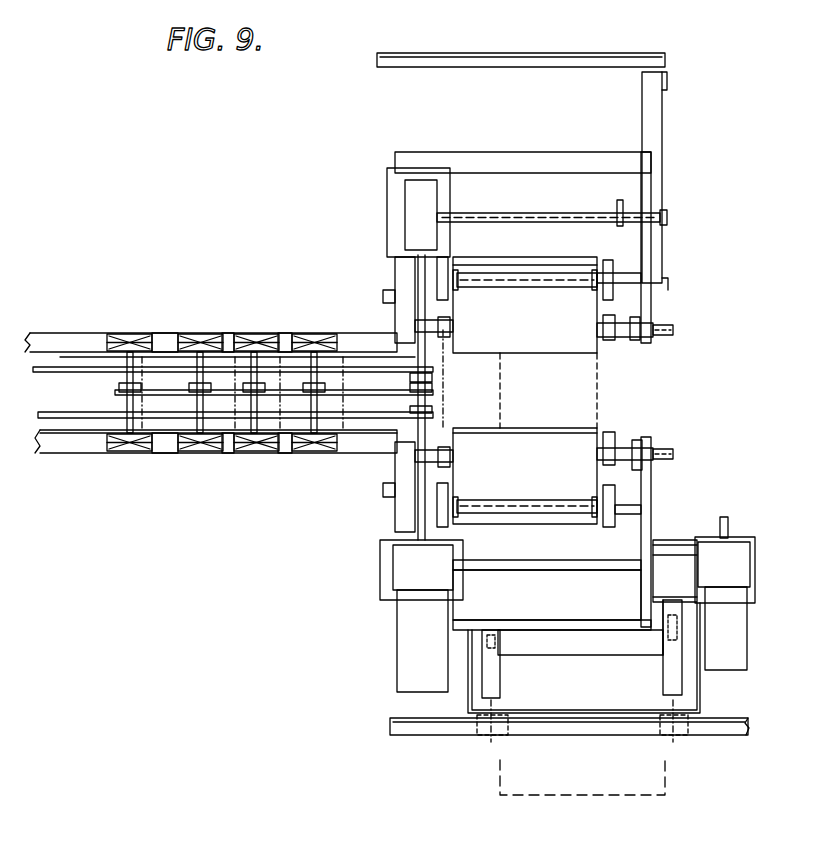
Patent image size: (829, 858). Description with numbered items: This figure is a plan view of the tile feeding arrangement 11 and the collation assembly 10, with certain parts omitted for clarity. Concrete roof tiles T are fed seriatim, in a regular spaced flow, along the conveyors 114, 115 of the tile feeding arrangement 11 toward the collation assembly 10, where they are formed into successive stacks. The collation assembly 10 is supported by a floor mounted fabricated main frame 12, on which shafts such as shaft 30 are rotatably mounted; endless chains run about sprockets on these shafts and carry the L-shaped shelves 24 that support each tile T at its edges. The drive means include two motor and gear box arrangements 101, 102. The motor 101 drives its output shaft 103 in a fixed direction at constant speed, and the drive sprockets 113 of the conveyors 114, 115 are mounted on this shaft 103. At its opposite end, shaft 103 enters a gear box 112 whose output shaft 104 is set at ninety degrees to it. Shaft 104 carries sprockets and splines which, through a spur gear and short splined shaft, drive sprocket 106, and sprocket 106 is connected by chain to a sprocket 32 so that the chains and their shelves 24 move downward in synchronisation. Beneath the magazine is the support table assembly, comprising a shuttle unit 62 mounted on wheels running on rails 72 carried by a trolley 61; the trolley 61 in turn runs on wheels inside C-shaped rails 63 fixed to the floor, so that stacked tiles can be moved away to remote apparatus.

The collation assembly 10 is at (680, 290).
The tile feeding arrangement 11 is at (263, 285).
The main frame 12 is at (508, 158).
The shelves 24 is at (527, 352).
The shaft 30 is at (548, 282).
The sprockets 32 is at (630, 340).
The trolley 61 is at (655, 108).
The shuttle unit 62 is at (665, 150).
The rails 63 is at (521, 52).
The rails 72 is at (498, 690).
The motor 101 is at (400, 660).
The motor and gear box arrangement 102 is at (723, 665).
The output shaft 103 is at (415, 520).
The output shaft 104 is at (477, 222).
The sprocket 106 is at (615, 215).
The gear box 112 is at (412, 208).
The drive sprockets 113 is at (430, 408).
The conveyor 114 is at (138, 388).
The conveyor 115 is at (73, 368).
The concrete roof tiles T is at (587, 393).